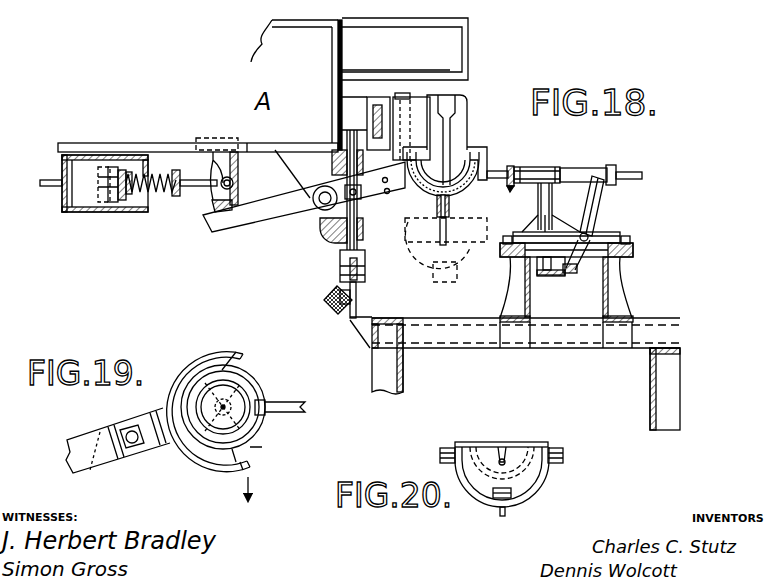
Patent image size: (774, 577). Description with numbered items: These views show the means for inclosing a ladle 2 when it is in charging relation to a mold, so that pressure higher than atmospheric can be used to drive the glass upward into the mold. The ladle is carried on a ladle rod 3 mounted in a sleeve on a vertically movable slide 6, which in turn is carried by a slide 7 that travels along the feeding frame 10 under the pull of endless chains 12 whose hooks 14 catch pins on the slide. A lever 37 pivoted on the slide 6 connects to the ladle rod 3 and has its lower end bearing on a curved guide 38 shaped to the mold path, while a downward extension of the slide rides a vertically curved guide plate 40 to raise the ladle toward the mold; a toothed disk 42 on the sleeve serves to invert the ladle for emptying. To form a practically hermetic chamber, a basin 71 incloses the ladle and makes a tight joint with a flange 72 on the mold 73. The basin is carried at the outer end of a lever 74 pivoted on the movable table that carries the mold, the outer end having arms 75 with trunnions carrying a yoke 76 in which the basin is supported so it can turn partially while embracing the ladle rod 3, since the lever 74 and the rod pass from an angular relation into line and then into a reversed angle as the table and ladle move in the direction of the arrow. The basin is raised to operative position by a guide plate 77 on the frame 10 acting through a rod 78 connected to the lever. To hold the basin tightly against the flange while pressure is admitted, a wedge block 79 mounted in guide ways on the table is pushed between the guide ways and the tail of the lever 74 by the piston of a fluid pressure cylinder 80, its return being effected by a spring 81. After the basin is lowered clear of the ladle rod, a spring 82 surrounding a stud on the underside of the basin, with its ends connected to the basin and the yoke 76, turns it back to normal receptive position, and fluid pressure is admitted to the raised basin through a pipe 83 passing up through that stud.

In FIG. 18, the ladle 2 is at (465, 176).
In FIG. 19, the ladle 2 is at (245, 394).
In FIG. 18, the ladle rod 3 is at (494, 182).
In FIG. 19, the ladle rod 3 is at (302, 412).
In FIG. 18, the vertically movable slide 6 is at (590, 174).
In FIG. 18, the slide 7 is at (597, 241).
In FIG. 18, the feeding frame 10 is at (510, 300).
In FIG. 18, the endless chains 12 is at (634, 250).
In FIG. 18, the hooks 14 is at (640, 246).
In FIG. 18, the lever 37 is at (600, 196).
In FIG. 18, the curved guide 38 is at (572, 272).
In FIG. 18, the vertically curved guide plate 40 is at (541, 277).
In FIG. 18, the toothed disk 42 is at (514, 188).
In FIG. 19, the basin 71 is at (262, 428).
In FIG. 20, the basin 71 is at (530, 448).
In FIG. 18, the flange 72 is at (482, 153).
In FIG. 18, the mold 73 is at (457, 118).
In FIG. 18, the lever 74 is at (275, 212).
In FIG. 19, the lever 74 is at (90, 462).
In FIG. 19, the arms 75 is at (188, 452).
In FIG. 20, the arms 75 is at (448, 448).
In FIG. 18, the yoke 76 is at (437, 206).
In FIG. 19, the yoke 76 is at (250, 448).
In FIG. 20, the yoke 76 is at (543, 488).
In FIG. 18, the guide plate 77 is at (325, 292).
In FIG. 18, the rod 78 is at (365, 268).
In FIG. 18, the wedge block 79 is at (240, 168).
In FIG. 18, the cylinder 80 is at (118, 212).
In FIG. 18, the spring 81 is at (164, 197).
In FIG. 18, the spring 82 is at (446, 243).
In FIG. 20, the spring 82 is at (495, 494).
In FIG. 18, the pipe 83 is at (445, 245).
In FIG. 20, the pipe 83 is at (502, 518).